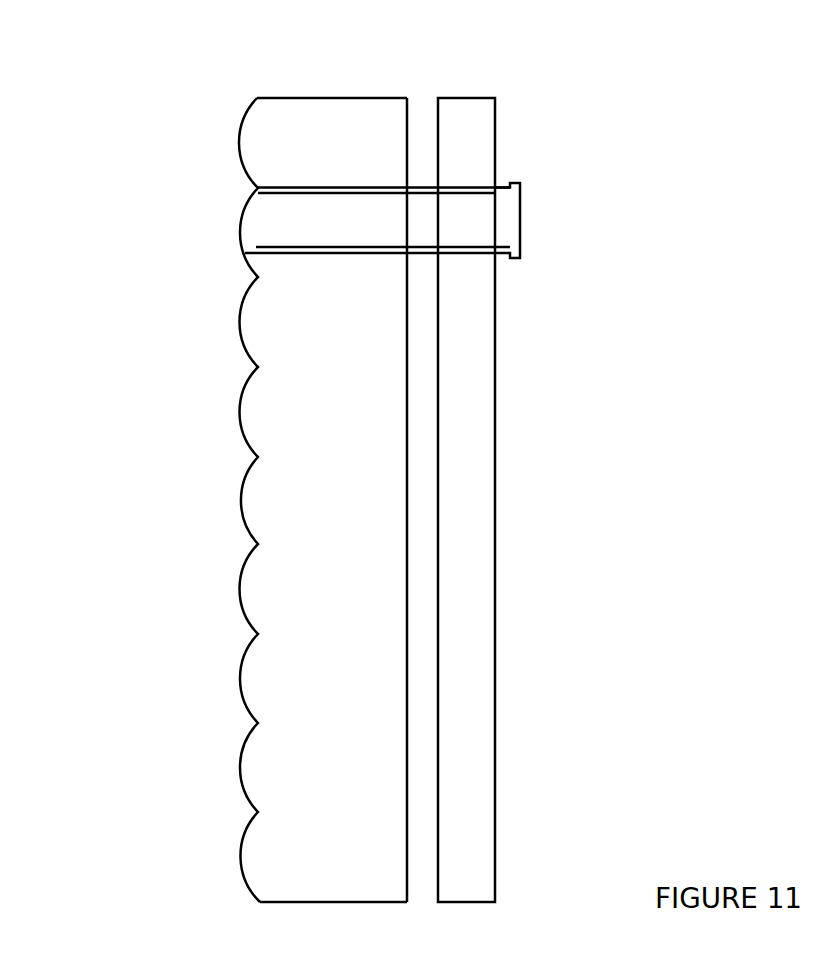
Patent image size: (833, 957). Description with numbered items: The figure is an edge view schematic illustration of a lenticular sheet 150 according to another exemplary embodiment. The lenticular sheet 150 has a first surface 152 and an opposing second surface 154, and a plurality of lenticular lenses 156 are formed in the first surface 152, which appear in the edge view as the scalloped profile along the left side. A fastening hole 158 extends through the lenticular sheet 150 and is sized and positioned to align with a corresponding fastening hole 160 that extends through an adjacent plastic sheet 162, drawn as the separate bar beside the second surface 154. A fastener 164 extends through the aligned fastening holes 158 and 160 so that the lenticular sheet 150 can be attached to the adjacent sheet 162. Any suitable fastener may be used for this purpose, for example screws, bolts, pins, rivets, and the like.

The lenticular sheet 150 is at (193, 35).
The first surface 152 is at (209, 787).
The second surface 154 is at (407, 800).
The lenticular lenses 156 is at (243, 600).
The fastening hole 158 is at (316, 187).
The fastening hole 160 is at (463, 187).
The plastic sheet 162 is at (495, 330).
The fastener 164 is at (520, 220).